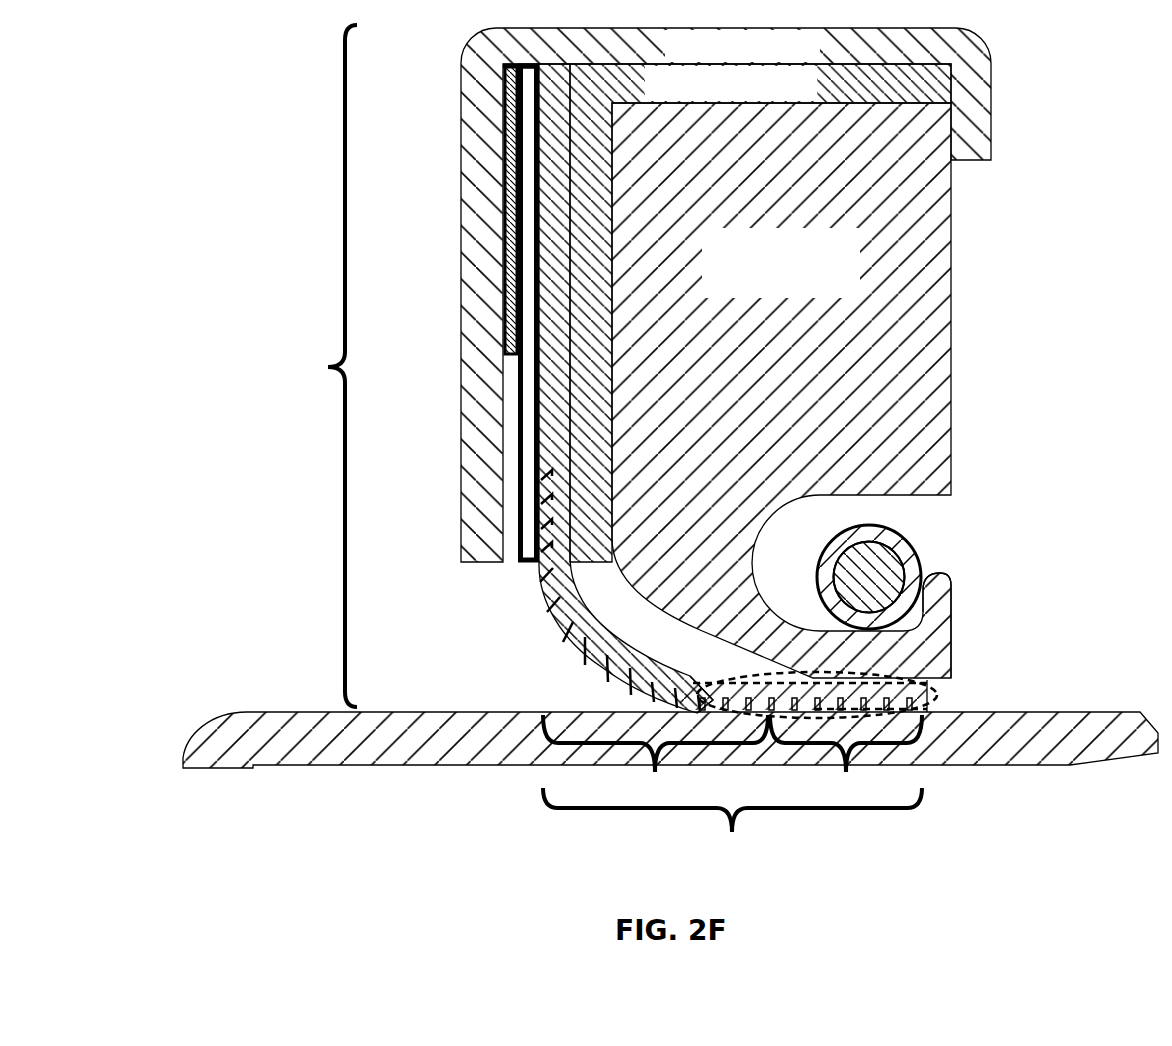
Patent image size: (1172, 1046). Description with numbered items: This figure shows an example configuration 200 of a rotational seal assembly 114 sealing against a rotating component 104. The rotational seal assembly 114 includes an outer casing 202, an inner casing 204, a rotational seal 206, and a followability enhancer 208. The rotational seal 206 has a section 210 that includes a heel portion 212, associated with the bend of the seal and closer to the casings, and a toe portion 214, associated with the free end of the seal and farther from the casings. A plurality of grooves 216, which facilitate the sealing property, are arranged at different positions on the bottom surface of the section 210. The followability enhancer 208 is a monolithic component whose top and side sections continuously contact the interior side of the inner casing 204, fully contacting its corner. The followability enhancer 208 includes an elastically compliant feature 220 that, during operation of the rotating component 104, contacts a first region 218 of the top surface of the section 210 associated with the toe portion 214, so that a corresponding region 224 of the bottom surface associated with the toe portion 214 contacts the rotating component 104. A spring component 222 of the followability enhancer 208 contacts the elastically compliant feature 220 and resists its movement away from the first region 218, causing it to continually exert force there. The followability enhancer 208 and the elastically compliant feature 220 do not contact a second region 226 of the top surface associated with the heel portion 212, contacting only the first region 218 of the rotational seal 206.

The rotating component 104 is at (457, 763).
The rotational seal assembly 114 is at (318, 363).
The example configuration 200 is at (615, 373).
The outer casing 202 is at (761, 60).
The inner casing 204 is at (761, 93).
The rotational seal 206 is at (540, 598).
The followability enhancer 208 is at (798, 275).
The section 210 is at (732, 829).
The heel portion 212 is at (655, 760).
The toe portion 214 is at (846, 760).
The grooves 216 is at (602, 682).
The first region 218 is at (932, 685).
The elastically compliant feature 220 is at (957, 627).
The spring component 222 is at (921, 550).
The corresponding region 224 is at (932, 707).
The second region 226 is at (717, 668).